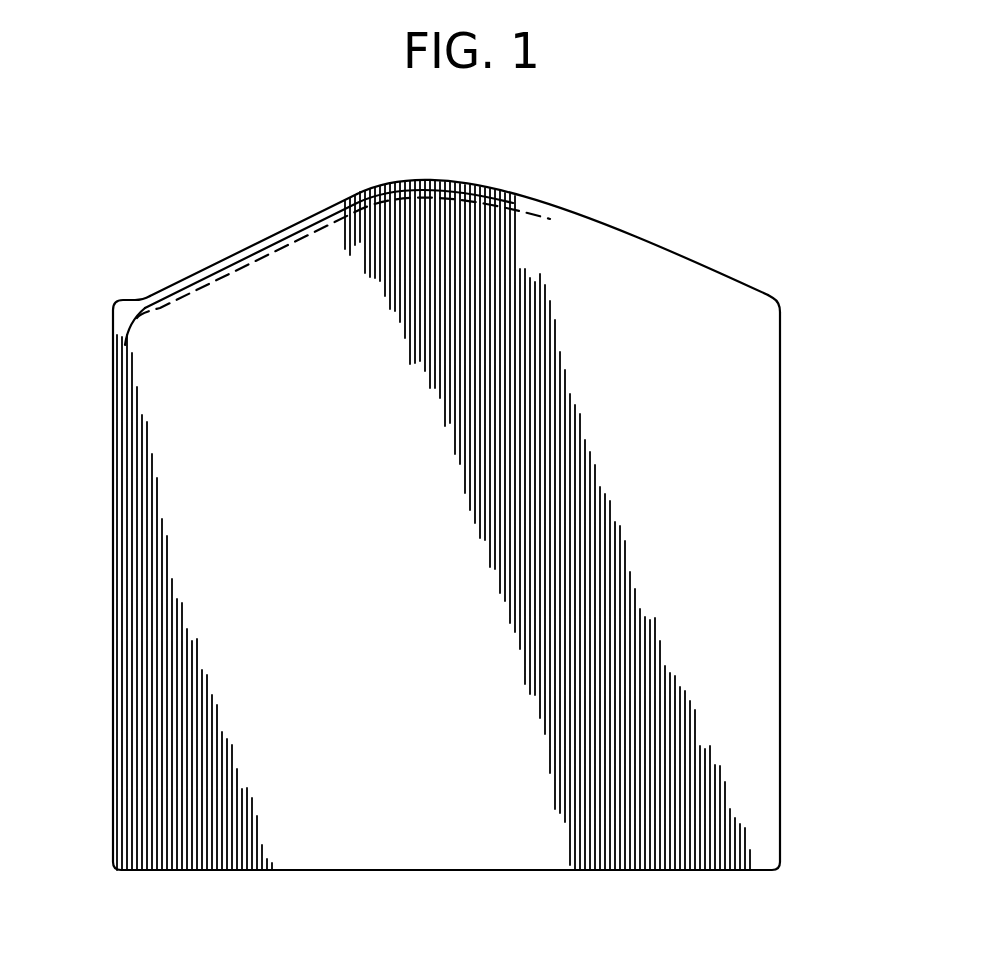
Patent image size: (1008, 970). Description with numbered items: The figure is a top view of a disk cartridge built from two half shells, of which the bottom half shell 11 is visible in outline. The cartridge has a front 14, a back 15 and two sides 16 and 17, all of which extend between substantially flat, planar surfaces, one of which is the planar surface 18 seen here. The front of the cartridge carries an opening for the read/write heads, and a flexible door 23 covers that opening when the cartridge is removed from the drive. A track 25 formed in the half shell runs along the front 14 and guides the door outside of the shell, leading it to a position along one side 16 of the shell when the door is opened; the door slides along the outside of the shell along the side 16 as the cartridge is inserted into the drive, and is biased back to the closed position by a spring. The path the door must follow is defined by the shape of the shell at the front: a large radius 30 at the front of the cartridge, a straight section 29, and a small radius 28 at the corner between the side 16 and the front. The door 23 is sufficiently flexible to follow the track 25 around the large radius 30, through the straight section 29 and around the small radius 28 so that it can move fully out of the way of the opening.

The bottom half shell 11 is at (449, 521).
The front 14 is at (580, 230).
The back 15 is at (148, 873).
The side 16 is at (113, 452).
The side 17 is at (782, 622).
The planar surface 18 is at (678, 483).
The flexible door 23 is at (137, 307).
The track 25 is at (297, 237).
The small radius 28 is at (135, 338).
The straight section 29 is at (242, 247).
The large radius 30 is at (425, 180).